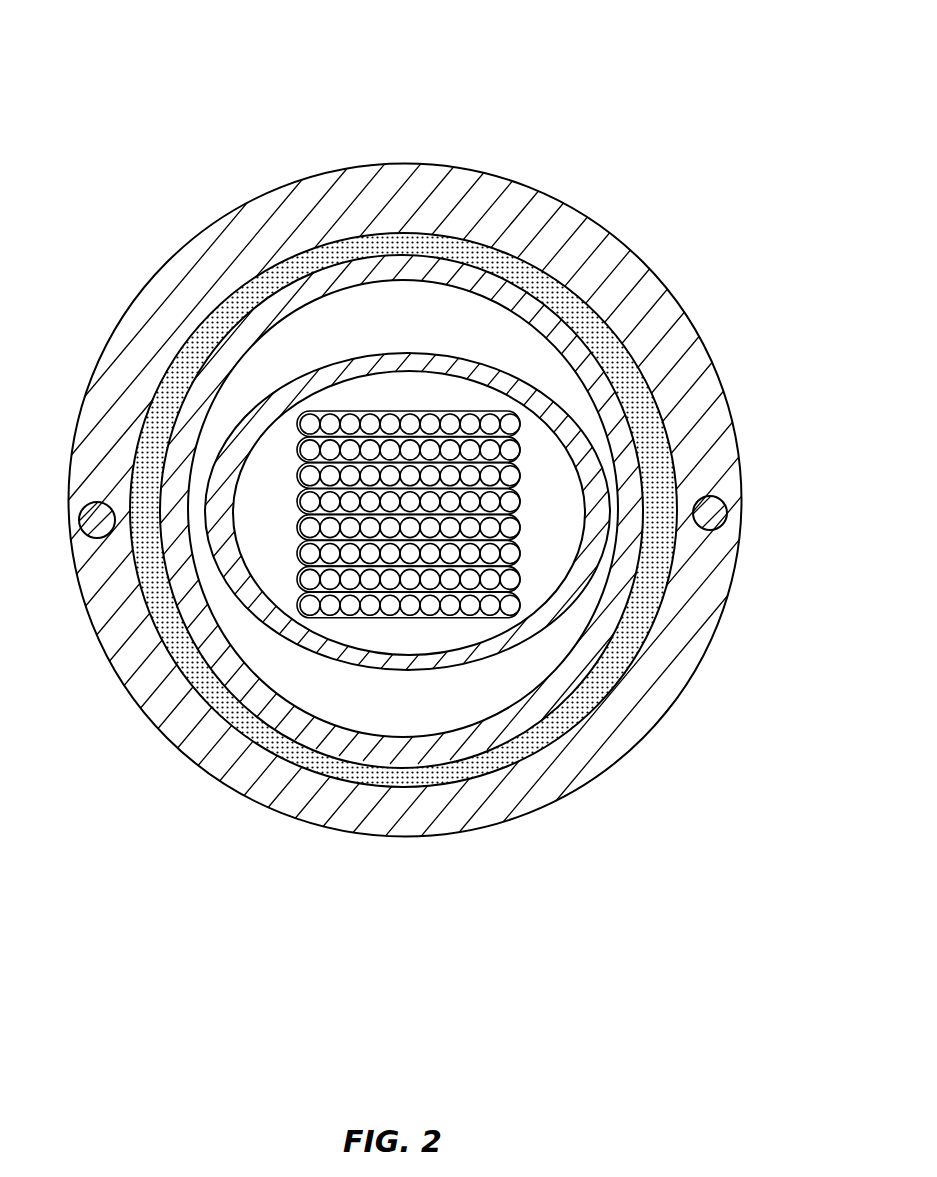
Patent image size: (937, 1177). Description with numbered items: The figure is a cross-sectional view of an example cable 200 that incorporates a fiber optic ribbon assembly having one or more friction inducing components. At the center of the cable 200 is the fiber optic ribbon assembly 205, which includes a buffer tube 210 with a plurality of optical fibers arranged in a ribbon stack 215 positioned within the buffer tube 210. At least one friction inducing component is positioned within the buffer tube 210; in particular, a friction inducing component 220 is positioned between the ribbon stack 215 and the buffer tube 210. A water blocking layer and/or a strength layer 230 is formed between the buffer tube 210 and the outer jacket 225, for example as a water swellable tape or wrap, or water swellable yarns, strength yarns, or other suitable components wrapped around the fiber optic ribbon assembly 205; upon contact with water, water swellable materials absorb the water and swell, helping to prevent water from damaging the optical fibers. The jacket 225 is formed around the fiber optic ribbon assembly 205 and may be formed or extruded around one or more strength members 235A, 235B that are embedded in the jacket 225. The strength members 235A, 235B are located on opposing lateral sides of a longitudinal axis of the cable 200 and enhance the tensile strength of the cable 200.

The cable 200 is at (148, 58).
The fiber optic ribbon assembly 205 is at (502, 267).
The buffer tube 210 is at (623, 383).
The ribbon stack 215 is at (530, 575).
The friction inducing component 220 is at (533, 650).
The jacket 225 is at (433, 215).
The strength layer 230 is at (587, 298).
The strength member 235A is at (716, 518).
The strength member 235B is at (95, 512).